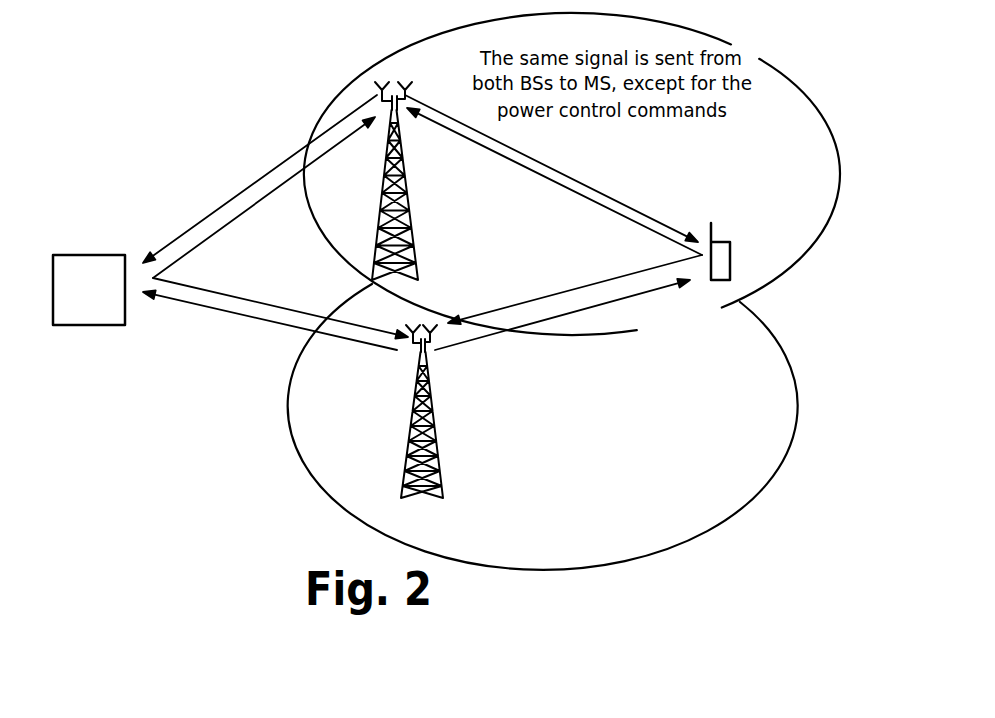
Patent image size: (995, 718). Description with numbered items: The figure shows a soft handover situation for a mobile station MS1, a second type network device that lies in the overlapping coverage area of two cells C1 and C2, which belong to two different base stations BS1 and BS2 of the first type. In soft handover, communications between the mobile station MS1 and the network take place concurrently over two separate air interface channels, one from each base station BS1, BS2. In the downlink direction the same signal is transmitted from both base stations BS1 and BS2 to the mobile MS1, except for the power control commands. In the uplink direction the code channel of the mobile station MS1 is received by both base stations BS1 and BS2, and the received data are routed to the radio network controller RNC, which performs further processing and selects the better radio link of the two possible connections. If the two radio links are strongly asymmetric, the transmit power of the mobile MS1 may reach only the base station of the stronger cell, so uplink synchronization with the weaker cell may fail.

The base station BS1 is at (410, 229).
The base station BS2 is at (437, 479).
The mobile station MS1 is at (744, 251).
The radio network controller RNC is at (90, 325).
The cell C1 is at (835, 145).
The cell C2 is at (800, 375).